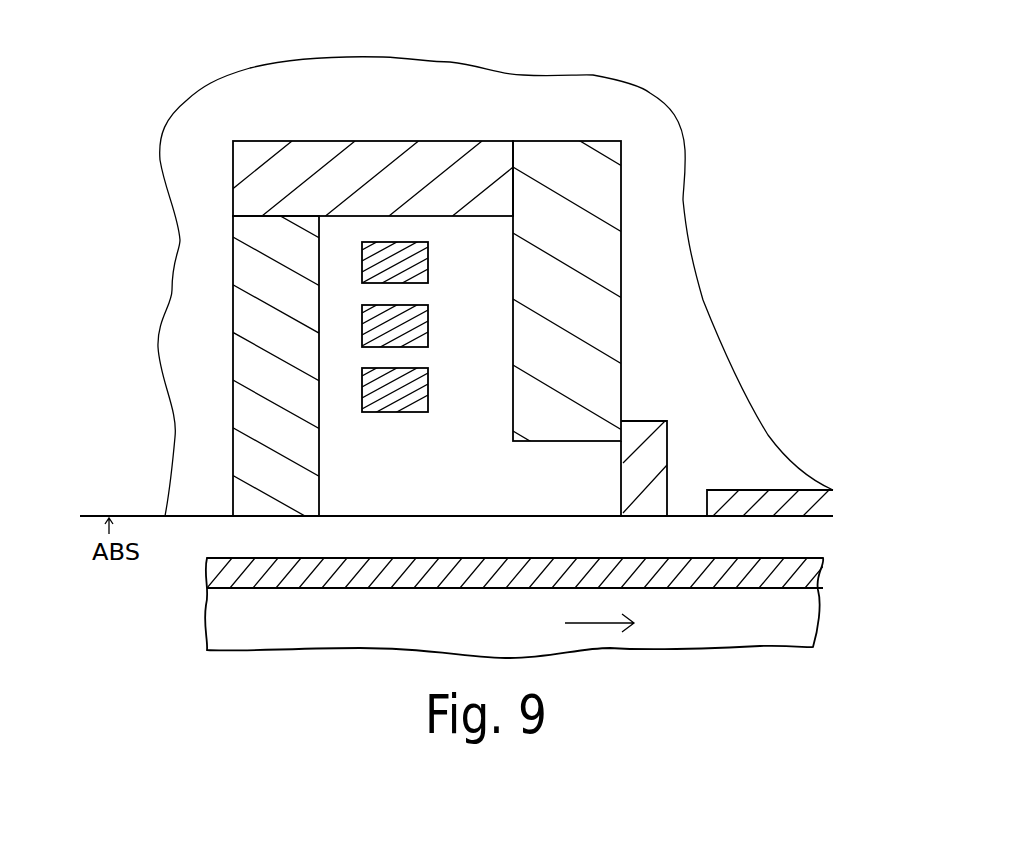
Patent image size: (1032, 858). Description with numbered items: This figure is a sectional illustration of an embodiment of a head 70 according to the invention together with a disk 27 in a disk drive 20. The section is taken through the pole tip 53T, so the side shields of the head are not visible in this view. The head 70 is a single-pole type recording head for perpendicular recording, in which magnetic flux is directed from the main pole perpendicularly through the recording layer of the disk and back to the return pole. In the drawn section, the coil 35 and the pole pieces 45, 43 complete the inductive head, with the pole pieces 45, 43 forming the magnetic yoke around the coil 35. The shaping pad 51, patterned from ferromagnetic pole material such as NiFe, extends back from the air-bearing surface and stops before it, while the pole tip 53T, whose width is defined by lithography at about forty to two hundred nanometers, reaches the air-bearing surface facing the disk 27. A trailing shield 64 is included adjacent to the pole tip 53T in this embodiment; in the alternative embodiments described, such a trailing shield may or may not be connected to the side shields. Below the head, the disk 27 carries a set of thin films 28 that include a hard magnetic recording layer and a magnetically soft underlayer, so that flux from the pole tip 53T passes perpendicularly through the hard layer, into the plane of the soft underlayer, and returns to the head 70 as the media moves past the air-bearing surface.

The disk drive 20 is at (128, 212).
The pole piece 45 is at (385, 152).
The shaping pad 51 is at (608, 197).
The pole piece 43 is at (250, 306).
The coil 35 is at (397, 412).
The pole tip 53T is at (663, 440).
The trailing shield 64 is at (737, 492).
The head 70 is at (678, 273).
The disk 27 is at (182, 628).
The thin films 28 is at (807, 572).